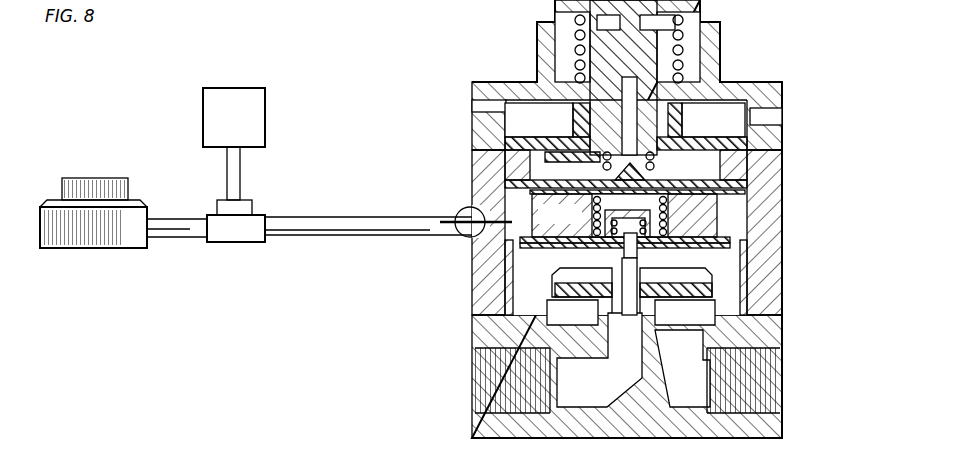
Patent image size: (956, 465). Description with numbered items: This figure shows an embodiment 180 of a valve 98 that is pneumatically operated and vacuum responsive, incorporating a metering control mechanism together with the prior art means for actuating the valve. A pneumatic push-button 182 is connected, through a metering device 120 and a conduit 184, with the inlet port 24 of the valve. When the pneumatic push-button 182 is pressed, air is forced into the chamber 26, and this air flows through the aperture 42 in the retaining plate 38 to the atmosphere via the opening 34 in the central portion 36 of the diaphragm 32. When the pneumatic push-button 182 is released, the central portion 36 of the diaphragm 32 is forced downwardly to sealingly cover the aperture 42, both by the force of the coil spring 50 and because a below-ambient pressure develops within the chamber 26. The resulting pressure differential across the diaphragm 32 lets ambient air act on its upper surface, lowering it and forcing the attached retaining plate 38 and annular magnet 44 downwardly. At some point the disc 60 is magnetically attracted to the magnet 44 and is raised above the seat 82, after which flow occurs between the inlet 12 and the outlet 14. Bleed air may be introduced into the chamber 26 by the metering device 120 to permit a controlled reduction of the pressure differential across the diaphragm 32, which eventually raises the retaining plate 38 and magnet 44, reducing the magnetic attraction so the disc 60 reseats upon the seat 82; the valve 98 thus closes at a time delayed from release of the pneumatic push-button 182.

The inlet 12 is at (619, 219).
The outlet 14 is at (474, 402).
The inlet port 24 is at (462, 234).
The chamber 26 is at (745, 243).
The diaphragm 32 is at (745, 185).
The central opening 34 is at (612, 158).
The central portion 36 is at (695, 158).
The retaining plate 38 is at (745, 205).
The aperture 42 is at (596, 213).
The annular magnet 44 is at (730, 228).
The coil spring 50 is at (600, 128).
The disc 60 is at (745, 262).
The seat 82 is at (572, 262).
The valve 98 is at (458, 163).
The metering device 120 is at (265, 107).
The embodiment 180 is at (597, 219).
The pneumatic push-button 182 is at (78, 250).
The conduit 184 is at (372, 236).